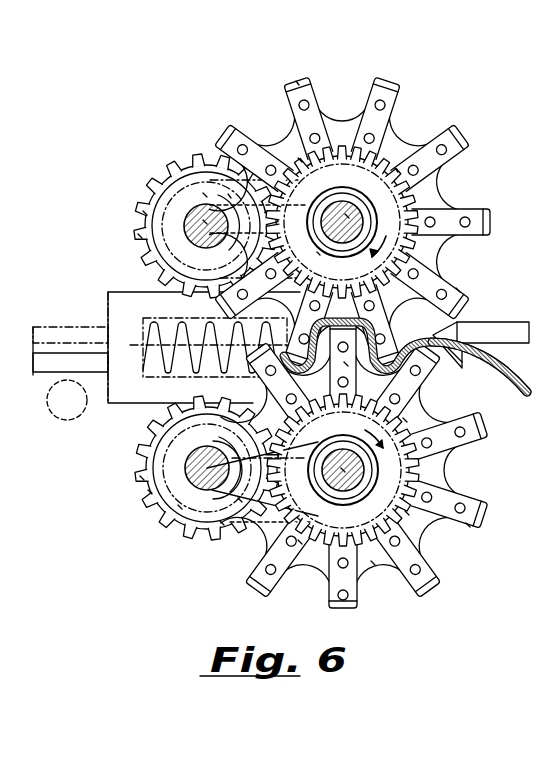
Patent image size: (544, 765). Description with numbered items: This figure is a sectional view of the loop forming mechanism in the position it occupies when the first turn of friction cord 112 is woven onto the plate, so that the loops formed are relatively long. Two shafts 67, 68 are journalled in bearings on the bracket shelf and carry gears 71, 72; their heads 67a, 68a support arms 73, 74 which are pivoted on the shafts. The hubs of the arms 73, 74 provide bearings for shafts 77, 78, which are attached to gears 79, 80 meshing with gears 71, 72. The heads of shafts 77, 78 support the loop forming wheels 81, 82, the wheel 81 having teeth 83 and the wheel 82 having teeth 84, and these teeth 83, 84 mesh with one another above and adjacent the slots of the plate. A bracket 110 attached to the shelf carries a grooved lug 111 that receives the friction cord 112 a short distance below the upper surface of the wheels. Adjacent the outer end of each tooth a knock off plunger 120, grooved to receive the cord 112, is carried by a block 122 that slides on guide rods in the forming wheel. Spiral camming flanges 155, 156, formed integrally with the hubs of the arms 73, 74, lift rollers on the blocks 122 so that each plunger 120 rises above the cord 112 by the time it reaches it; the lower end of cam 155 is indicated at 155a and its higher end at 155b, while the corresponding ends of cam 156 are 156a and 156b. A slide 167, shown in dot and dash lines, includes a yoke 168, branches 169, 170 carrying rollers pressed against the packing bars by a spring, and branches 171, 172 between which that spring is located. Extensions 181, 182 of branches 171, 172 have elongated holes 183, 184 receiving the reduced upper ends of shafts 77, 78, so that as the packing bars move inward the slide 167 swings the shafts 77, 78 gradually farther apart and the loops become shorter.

The shaft 67 is at (200, 220).
The head 67a is at (205, 222).
The shaft 68 is at (197, 477).
The head 68a is at (180, 507).
The gear 71 is at (140, 236).
The gear 72 is at (142, 478).
The arm 73 is at (145, 213).
The arm 74 is at (150, 492).
The shaft 77 is at (347, 216).
The shaft 78 is at (343, 470).
The gear 79 is at (300, 160).
The gear 80 is at (407, 513).
The loop forming wheel 81 is at (394, 170).
The loop forming wheel 82 is at (373, 563).
The teeth 83 is at (458, 292).
The teeth 84 is at (468, 525).
The bracket 110 is at (502, 328).
The lug 111 is at (472, 347).
The friction cord 112 is at (500, 372).
The knock off plunger 120 is at (378, 332).
The block 122 is at (346, 364).
The camming flange 155 is at (338, 148).
The lower end of cam 155 155a is at (290, 135).
The higher end of cam 155 155b is at (318, 252).
The camming flange 156 is at (373, 535).
The lower end of cam 156 156a is at (302, 545).
The higher end of cam 156 156b is at (405, 418).
The slide 167 is at (67, 400).
The yoke 168 is at (120, 330).
The branch 169 is at (37, 326).
The branch 170 is at (38, 362).
The branch 171 is at (143, 300).
The branch 172 is at (157, 393).
The extension 181 is at (205, 195).
The extension 182 is at (222, 523).
The elongated hole 183 is at (230, 197).
The elongated hole 184 is at (240, 500).